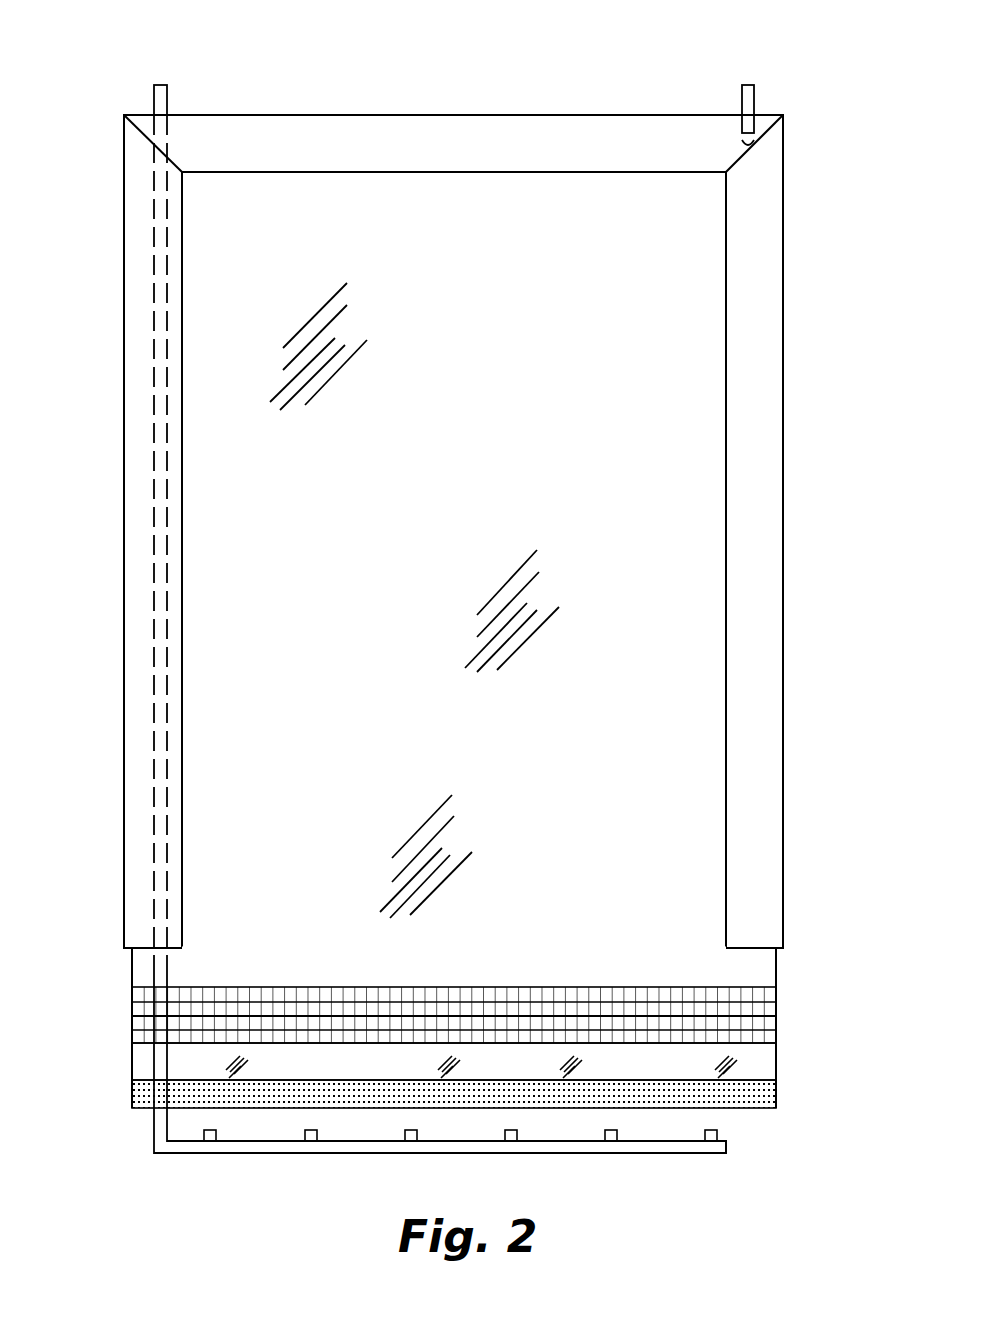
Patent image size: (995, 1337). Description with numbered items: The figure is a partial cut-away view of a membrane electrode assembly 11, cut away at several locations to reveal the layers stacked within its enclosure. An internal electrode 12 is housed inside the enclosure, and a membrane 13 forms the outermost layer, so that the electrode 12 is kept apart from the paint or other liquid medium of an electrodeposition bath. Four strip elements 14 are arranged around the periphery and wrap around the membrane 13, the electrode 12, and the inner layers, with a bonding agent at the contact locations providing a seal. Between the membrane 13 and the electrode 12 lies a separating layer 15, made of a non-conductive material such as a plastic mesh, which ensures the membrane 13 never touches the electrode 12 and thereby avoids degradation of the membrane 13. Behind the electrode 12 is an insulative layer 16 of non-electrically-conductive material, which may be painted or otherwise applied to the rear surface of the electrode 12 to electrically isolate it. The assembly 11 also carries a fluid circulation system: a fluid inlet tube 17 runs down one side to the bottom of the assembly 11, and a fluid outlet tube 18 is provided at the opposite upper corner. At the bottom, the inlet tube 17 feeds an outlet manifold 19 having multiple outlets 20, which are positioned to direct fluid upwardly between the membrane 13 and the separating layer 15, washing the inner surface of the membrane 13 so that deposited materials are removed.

The membrane electrode assembly 11 is at (102, 76).
The internal electrode 12 is at (140, 1058).
The membrane 13 is at (222, 425).
The strip elements 14 is at (423, 132).
The separating layer 15 is at (140, 1008).
The insulative layer 16 is at (140, 1097).
The fluid inlet tube 17 is at (167, 93).
The fluid outlet tube 18 is at (754, 93).
The outlet manifold 19 is at (340, 1153).
The outlets 20 is at (216, 1133).